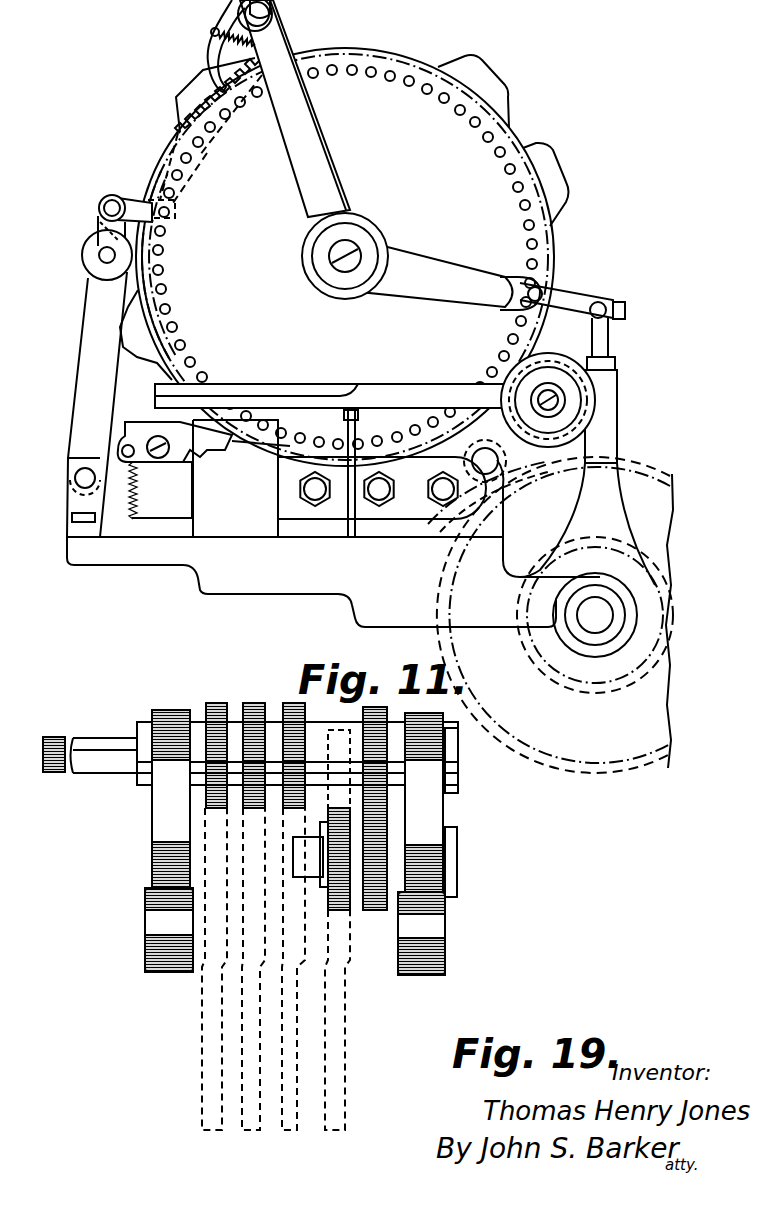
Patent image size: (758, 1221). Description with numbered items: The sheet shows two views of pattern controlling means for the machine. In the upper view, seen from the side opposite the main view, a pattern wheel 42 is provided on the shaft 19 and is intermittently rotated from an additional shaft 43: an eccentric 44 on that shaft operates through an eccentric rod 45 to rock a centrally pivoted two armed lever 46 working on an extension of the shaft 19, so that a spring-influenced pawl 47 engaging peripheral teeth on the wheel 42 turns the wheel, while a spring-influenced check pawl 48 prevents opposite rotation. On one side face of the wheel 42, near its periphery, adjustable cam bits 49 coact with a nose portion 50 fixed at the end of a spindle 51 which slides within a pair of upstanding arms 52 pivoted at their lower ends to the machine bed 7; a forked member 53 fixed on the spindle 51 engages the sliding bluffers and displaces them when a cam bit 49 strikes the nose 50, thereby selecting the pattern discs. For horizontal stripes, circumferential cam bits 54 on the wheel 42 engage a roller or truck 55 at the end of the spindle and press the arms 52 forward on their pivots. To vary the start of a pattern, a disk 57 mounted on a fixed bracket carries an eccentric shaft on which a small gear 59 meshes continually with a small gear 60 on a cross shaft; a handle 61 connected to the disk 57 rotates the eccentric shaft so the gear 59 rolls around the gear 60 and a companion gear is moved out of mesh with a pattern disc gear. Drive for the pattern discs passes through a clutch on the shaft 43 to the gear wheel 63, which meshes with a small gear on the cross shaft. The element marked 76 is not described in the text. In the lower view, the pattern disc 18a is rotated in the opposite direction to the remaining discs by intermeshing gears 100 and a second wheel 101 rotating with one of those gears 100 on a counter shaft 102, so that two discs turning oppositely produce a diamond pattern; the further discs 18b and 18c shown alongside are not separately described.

In FIG. 11, the machine bed 7 is at (333, 517).
In FIG. 11, the shaft 19 is at (352, 250).
In FIG. 11, the pattern wheel 42 is at (345, 257).
In FIG. 11, the additional shaft 43 is at (590, 615).
In FIG. 11, the eccentric 44 is at (600, 496).
In FIG. 11, the eccentric rod 45 is at (612, 330).
In FIG. 11, the two armed lever 46 is at (432, 268).
In FIG. 11, the spring-influenced pawl 47 is at (212, 24).
In FIG. 11, the spring-influenced check pawl 48 is at (196, 440).
In FIG. 11, the cam bits 49 is at (166, 158).
In FIG. 11, the nose portion 50 is at (137, 197).
In FIG. 11, the spindle 51 is at (100, 207).
In FIG. 11, the upstanding arms 52 is at (97, 404).
In FIG. 11, the forked member 53 is at (96, 225).
In FIG. 11, the circumferential cam bits 54 is at (508, 97).
In FIG. 11, the roller or truck 55 is at (108, 270).
In FIG. 11, the disk 57 is at (590, 426).
In FIG. 11, the small gear 59 is at (550, 375).
In FIG. 11, the small gear 60 is at (500, 488).
In FIG. 11, the handle 61 is at (388, 384).
In FIG. 11, the gear wheel 63 is at (555, 615).
In FIG. 11, the connecting rod 76 is at (352, 197).
In FIG. 19, the intermeshing gears 100 is at (350, 816).
In FIG. 19, the second wheel 101 is at (330, 813).
In FIG. 19, the counter shaft 102 is at (312, 875).
In FIG. 19, the pattern disc 18a is at (345, 1052).
In FIG. 19, the slides 18b is at (293, 1136).
In FIG. 19, the slide 18c is at (210, 1140).